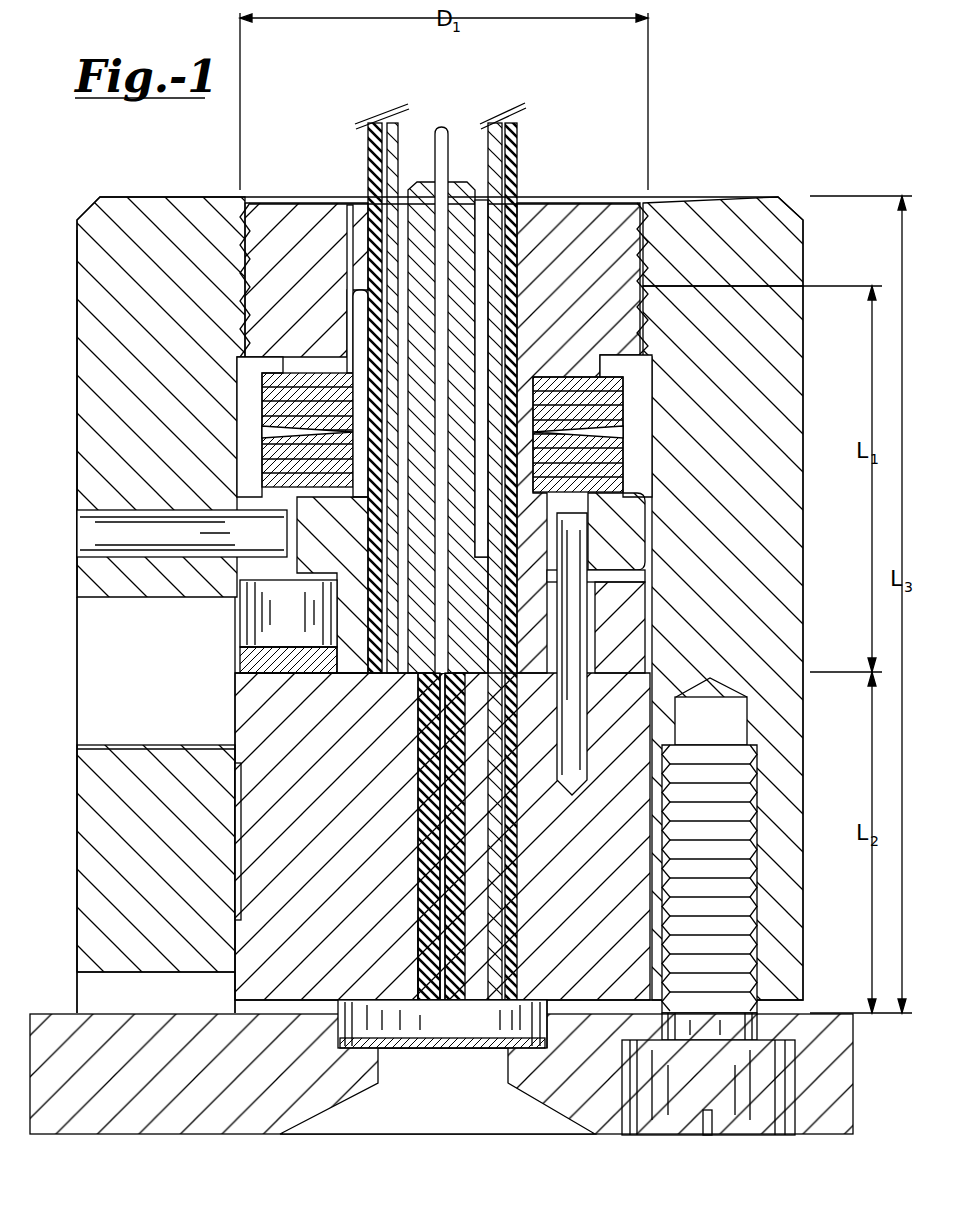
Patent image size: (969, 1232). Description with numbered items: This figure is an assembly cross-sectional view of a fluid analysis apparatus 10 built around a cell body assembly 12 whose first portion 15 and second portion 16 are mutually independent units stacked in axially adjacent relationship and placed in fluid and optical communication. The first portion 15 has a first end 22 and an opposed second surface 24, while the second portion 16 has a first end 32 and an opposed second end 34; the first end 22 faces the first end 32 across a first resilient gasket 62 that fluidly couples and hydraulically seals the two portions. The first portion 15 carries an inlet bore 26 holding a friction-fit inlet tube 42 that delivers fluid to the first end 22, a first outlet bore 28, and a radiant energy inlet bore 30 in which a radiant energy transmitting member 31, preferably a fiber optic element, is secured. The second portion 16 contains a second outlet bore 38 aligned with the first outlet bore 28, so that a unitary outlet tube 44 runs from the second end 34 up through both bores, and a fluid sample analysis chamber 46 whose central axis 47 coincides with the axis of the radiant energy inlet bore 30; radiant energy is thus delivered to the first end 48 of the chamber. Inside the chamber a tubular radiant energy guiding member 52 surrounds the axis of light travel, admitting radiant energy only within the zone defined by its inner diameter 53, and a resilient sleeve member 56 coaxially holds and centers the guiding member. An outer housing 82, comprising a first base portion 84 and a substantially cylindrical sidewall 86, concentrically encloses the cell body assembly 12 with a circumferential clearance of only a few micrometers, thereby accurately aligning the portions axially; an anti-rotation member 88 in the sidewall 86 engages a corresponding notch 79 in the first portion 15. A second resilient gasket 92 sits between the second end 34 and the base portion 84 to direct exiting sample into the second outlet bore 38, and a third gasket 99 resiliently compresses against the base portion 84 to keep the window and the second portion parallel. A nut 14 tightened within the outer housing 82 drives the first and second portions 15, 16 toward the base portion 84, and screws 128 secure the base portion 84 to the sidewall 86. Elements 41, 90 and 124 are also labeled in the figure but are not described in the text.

The fluid analysis apparatus 10 is at (783, 172).
The cell body assembly 12 is at (598, 197).
The nut 14 is at (303, 292).
The first portion 15 is at (627, 545).
The second portion 16 is at (294, 834).
The first end 22 is at (357, 673).
The second surface 24 is at (627, 490).
The inlet bore 26 is at (363, 283).
The first outlet bore 28 is at (520, 280).
The radiant energy inlet bore 30 is at (453, 182).
The radiant energy transmitting member 31 is at (437, 147).
The first end 32 is at (268, 650).
The second end 34 is at (248, 1013).
The second outlet bore 38 is at (477, 1000).
The insert 41 is at (358, 527).
The inlet tube 42 is at (368, 152).
The outlet tube 44 is at (517, 143).
The fluid sample analysis chamber 46 is at (417, 917).
The central axis 47 is at (442, 795).
The first end 48 is at (407, 673).
The radiant energy guiding member 52 is at (417, 968).
The inner diameter 53 is at (453, 840).
The sleeve member 56 is at (420, 943).
The first resilient gasket 62 is at (473, 670).
The notch 79 is at (240, 487).
The outer housing 82 is at (73, 305).
The first base portion 84 is at (30, 1035).
The sidewall 86 is at (75, 432).
The anti-rotation member 88 is at (77, 545).
The cap 90 is at (340, 1040).
The second resilient gasket 92 is at (338, 1048).
The third gasket 99 is at (525, 1050).
The spring 124 is at (260, 607).
The screws 128 is at (657, 1135).